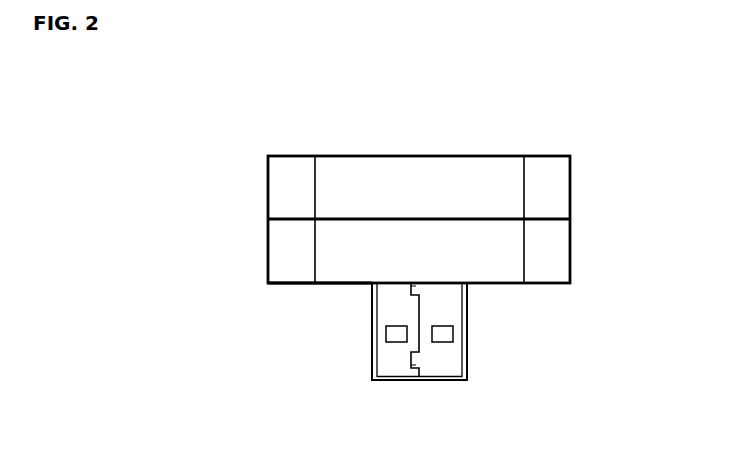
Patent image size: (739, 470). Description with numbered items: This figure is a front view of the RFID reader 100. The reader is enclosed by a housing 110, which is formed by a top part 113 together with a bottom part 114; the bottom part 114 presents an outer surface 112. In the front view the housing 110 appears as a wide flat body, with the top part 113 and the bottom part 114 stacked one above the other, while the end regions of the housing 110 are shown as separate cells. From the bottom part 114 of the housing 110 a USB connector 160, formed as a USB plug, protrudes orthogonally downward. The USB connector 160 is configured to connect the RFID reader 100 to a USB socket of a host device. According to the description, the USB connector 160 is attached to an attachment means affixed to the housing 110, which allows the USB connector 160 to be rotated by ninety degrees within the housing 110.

The RFID reader 100 is at (602, 223).
The housing 110 is at (546, 170).
The outer surface 112 is at (546, 270).
The top part 113 is at (268, 188).
The bottom part 114 is at (289, 284).
The USB connector 160 is at (442, 365).